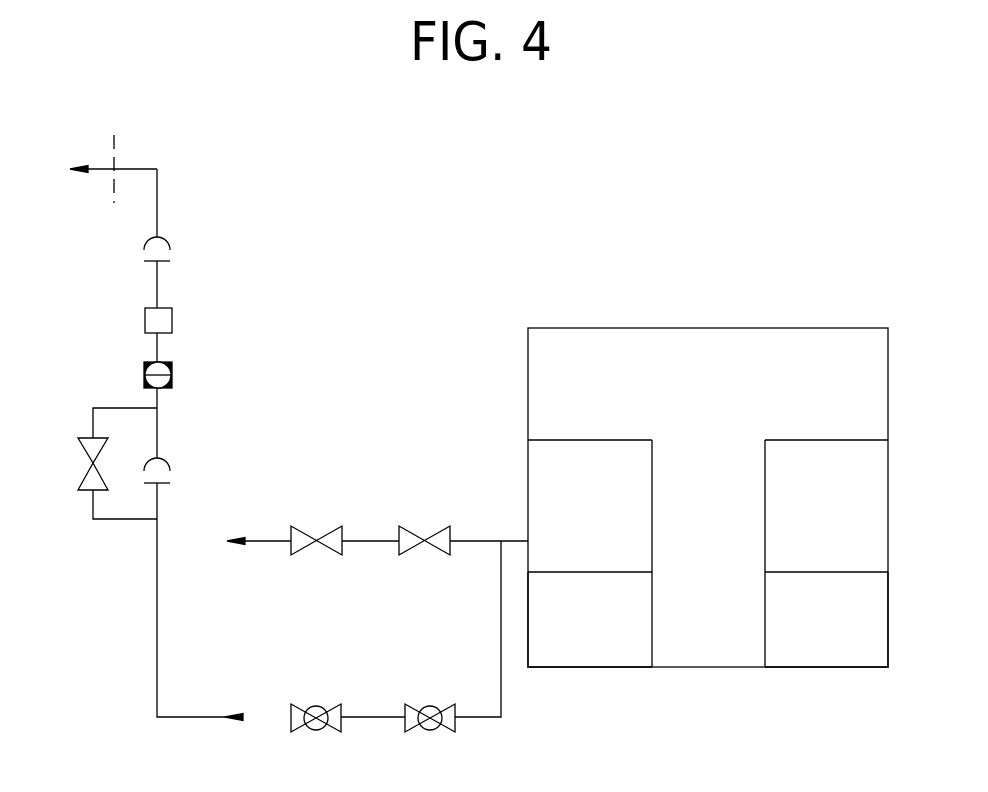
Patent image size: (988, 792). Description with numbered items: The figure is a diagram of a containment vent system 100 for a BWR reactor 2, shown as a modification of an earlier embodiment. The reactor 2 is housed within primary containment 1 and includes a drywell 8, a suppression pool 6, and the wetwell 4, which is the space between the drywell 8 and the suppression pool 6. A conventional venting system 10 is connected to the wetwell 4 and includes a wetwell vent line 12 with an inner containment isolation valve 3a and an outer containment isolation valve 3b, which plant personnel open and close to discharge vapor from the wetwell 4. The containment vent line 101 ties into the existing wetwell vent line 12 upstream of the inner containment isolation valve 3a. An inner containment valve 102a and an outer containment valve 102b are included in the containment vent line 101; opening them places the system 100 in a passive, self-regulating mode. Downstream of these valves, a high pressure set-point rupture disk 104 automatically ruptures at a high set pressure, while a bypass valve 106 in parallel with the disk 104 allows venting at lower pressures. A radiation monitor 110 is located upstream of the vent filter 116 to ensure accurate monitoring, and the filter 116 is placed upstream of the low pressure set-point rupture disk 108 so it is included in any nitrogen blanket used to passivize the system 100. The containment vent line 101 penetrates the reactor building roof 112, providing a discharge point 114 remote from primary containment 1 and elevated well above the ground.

The containment vent system 100 is at (345, 250).
The primary containment 1 is at (528, 364).
The BWR reactor 2 is at (716, 583).
The wetwell 4 is at (600, 525).
The suppression pool 6 is at (600, 640).
The drywell 8 is at (717, 395).
The venting system 10 is at (316, 464).
The wetwell vent line 12 is at (492, 541).
The inner containment isolation valve 3a is at (424, 556).
The outer containment isolation valve 3b is at (316, 556).
The containment vent line 101 is at (501, 638).
The inner containment valve 102a is at (430, 737).
The outer containment valve 102b is at (316, 737).
The high pressure set-point rupture disk 104 is at (178, 478).
The bypass valve 106 is at (117, 463).
The low pressure set-point rupture disk 108 is at (179, 252).
The radiation monitor 110 is at (183, 371).
The reactor building roof 112 is at (115, 156).
The discharge point 114 is at (105, 149).
The vent filter 116 is at (183, 320).